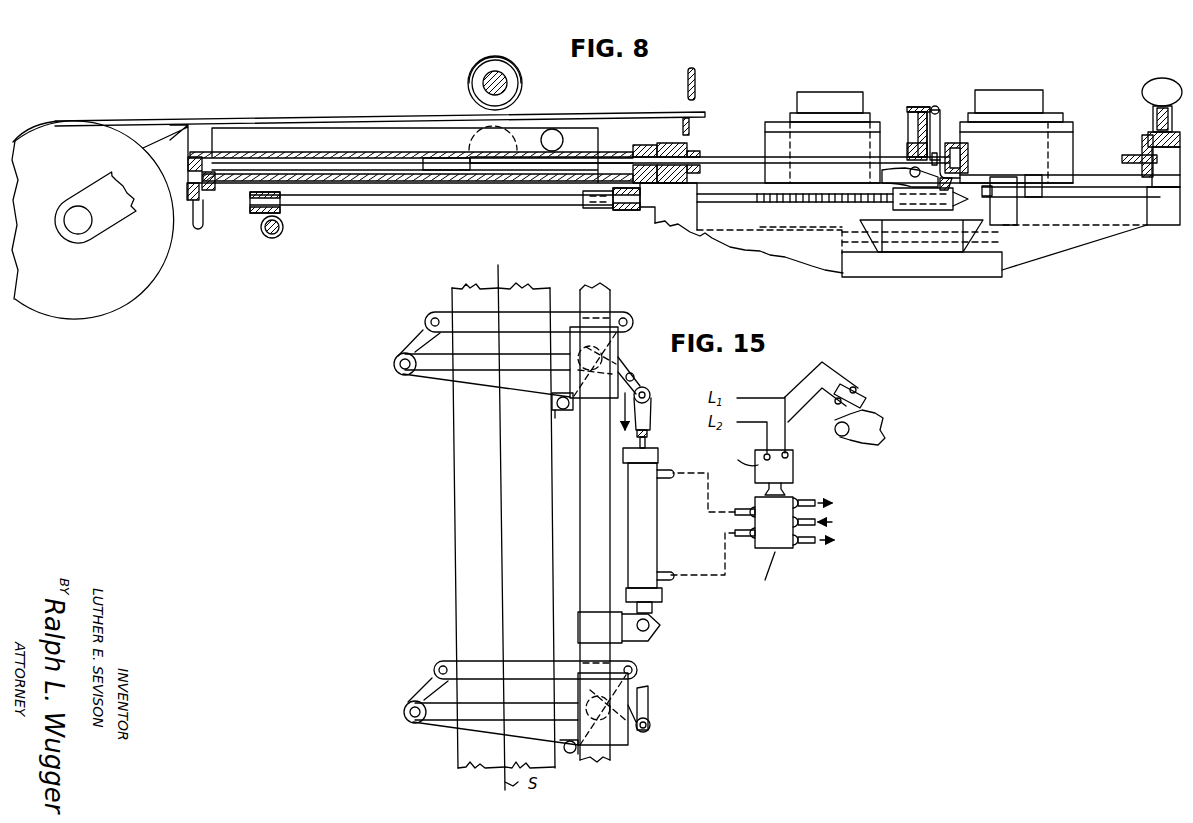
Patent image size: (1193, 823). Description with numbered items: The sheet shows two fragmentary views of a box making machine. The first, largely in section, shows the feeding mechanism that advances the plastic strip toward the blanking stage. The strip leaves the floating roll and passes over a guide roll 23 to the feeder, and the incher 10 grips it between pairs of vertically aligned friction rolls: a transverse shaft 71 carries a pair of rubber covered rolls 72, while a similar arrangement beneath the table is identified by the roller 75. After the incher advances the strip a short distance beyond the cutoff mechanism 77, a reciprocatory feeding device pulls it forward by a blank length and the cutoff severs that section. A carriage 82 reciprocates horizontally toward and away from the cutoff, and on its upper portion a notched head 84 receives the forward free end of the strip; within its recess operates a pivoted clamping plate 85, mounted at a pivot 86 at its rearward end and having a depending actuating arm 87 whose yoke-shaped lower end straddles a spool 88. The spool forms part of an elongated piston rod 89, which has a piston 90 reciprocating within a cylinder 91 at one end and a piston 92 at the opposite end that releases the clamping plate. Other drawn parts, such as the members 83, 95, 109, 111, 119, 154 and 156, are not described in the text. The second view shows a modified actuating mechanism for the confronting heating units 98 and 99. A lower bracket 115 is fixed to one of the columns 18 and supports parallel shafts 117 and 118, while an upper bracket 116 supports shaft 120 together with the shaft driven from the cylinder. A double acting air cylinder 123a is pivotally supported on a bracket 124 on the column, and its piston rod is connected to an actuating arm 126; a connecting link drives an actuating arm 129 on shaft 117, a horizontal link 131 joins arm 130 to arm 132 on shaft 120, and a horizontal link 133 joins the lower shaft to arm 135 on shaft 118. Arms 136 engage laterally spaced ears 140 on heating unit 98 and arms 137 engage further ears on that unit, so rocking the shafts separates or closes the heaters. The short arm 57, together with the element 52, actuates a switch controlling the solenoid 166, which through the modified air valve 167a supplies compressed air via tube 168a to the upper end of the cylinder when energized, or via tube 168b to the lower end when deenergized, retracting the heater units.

In FIG. 8, the machine 10 is at (510, 58).
In FIG. 8, the guide roll 23 is at (135, 287).
In FIG. 8, the transverse shaft 71 is at (482, 86).
In FIG. 8, the rubber covered rolls 72 is at (522, 90).
In FIG. 8, the roller 75 is at (525, 148).
In FIG. 8, the cutoff mechanism 77 is at (688, 108).
In FIG. 8, the carriage 82 is at (918, 126).
In FIG. 8, the block 83 is at (676, 190).
In FIG. 8, the notched head 84 is at (917, 104).
In FIG. 8, the clamping plate 85 is at (930, 108).
In FIG. 8, the pivot 86 is at (938, 108).
In FIG. 8, the actuating arm 87 is at (940, 126).
In FIG. 8, the spool 88 is at (962, 179).
In FIG. 8, the piston rod 89 is at (730, 161).
In FIG. 8, the piston 90 is at (437, 165).
In FIG. 8, the cylinder 91 is at (290, 166).
In FIG. 8, the piston 92 is at (970, 158).
In FIG. 8, the lever 95 is at (890, 177).
In FIG. 8, the base 109 is at (935, 205).
In FIG. 8, the rack 111 is at (395, 203).
In FIG. 8, the shaft 119 is at (205, 221).
In FIG. 8, the handle 154 is at (1128, 155).
In FIG. 8, the knob 156 is at (1152, 128).
In FIG. 15, the columns 18 is at (585, 490).
In FIG. 15, the arm 57 is at (862, 404).
In FIG. 15, the cam 52 is at (860, 440).
In FIG. 15, the heating unit 98 is at (535, 521).
In FIG. 15, the heating unit 99 is at (456, 504).
In FIG. 15, the lower bracket 115 is at (470, 728).
In FIG. 15, the upper bracket 116 is at (458, 374).
In FIG. 15, the shaft 117 is at (580, 700).
In FIG. 15, the shaft 118 is at (410, 720).
In FIG. 15, the shaft 120 is at (400, 373).
In FIG. 15, the cylinder 123a is at (662, 595).
In FIG. 15, the bracket 124 is at (580, 626).
In FIG. 15, the actuating arm 126 is at (640, 383).
In FIG. 15, the actuating arm 129 is at (652, 706).
In FIG. 15, the arm 130 is at (620, 340).
In FIG. 15, the horizontal link 131 is at (511, 320).
In FIG. 15, the arm 132 is at (414, 340).
In FIG. 15, the horizontal link 133 is at (475, 662).
In FIG. 15, the arm 135 is at (422, 690).
In FIG. 15, the arms 136 is at (556, 412).
In FIG. 15, the arms 137 is at (573, 756).
In FIG. 15, the ears 140 is at (552, 400).
In FIG. 15, the solenoid 166 is at (794, 468).
In FIG. 15, the air valve 167a is at (785, 548).
In FIG. 15, the tube 168a is at (738, 509).
In FIG. 15, the tube 168b is at (737, 538).